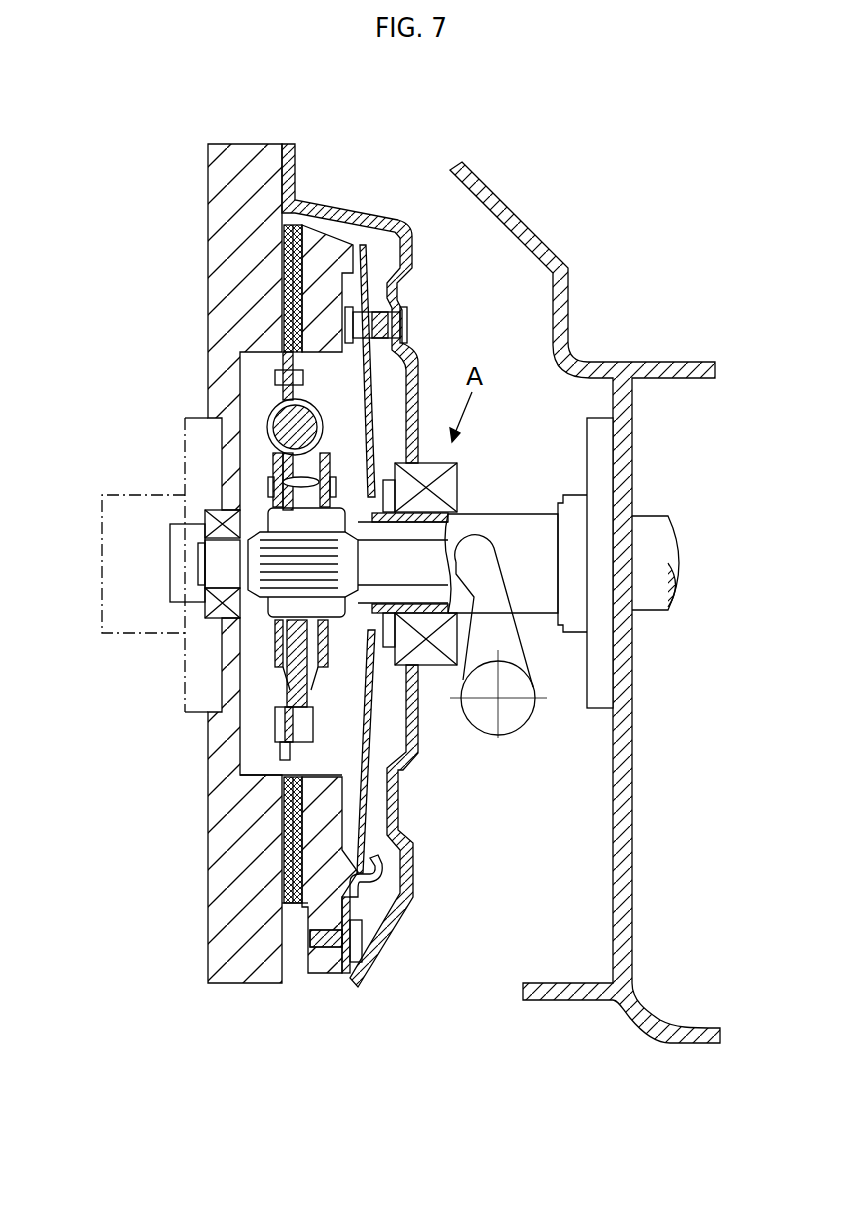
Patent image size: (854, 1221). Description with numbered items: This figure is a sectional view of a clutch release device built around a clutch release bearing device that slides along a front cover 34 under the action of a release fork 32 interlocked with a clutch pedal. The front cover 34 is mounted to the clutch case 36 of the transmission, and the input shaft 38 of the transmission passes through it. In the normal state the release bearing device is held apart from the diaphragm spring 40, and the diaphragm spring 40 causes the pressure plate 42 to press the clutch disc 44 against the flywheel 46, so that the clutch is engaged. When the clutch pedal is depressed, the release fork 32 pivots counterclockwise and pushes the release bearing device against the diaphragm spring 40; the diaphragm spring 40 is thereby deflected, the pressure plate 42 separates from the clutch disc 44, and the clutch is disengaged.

The release fork 32 is at (508, 643).
The front cover 34 is at (520, 530).
The clutch case 36 is at (522, 230).
The input shaft 38 is at (220, 562).
The diaphragm spring 40 is at (365, 773).
The pressure plate 42 is at (312, 245).
The clutch disc 44 is at (283, 240).
The flywheel 46 is at (223, 299).